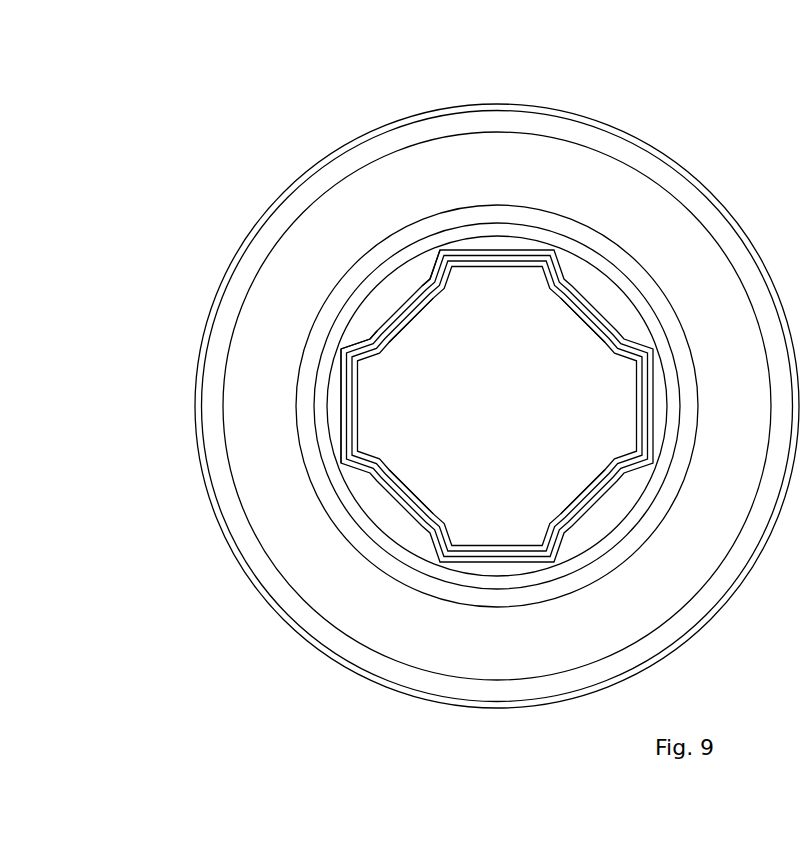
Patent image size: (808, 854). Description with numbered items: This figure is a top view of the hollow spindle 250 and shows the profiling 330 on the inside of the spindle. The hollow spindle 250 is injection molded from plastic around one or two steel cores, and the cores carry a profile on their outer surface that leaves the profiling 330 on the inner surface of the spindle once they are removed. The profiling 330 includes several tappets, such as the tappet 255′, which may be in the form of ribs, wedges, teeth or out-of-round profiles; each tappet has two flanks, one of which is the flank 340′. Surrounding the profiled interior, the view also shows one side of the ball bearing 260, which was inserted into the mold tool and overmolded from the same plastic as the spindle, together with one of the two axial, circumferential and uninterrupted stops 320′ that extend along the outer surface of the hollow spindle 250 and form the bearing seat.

The bearing 260 is at (266, 510).
The axial stop 320′ is at (645, 286).
The hollow spindle 250 is at (398, 541).
The flank 340′ is at (416, 268).
The profiling 330 is at (333, 417).
The tappet 255′ is at (426, 334).